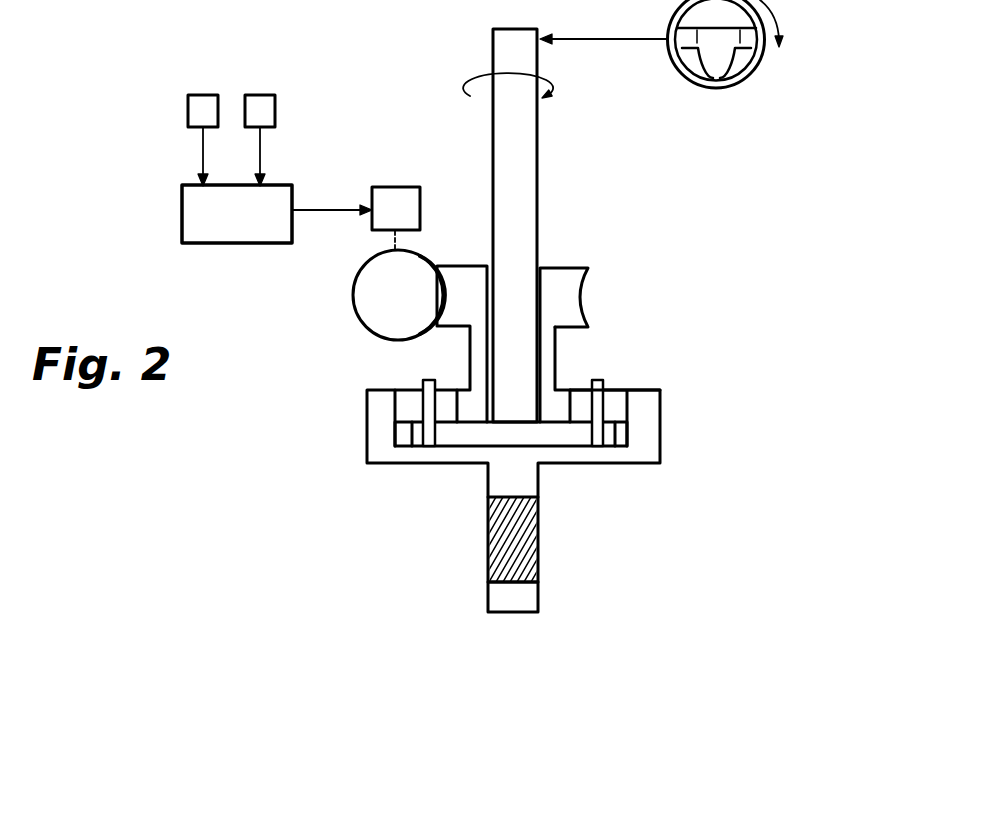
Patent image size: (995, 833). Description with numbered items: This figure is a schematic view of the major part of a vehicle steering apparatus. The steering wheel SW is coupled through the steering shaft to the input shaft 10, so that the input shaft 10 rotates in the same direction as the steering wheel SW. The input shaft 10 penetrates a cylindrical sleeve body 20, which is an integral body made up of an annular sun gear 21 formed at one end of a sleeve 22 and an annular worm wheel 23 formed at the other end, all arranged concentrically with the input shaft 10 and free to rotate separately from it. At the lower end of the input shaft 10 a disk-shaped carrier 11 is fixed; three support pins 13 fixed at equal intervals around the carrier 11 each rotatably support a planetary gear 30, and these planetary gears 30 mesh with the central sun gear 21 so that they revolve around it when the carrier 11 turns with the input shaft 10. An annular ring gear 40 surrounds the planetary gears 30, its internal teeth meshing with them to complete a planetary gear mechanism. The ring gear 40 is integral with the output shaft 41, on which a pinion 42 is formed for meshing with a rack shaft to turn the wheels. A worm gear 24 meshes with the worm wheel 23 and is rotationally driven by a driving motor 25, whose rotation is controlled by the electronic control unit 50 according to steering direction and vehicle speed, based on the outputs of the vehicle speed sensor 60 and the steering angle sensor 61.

The input shaft 10 is at (537, 140).
The carrier 11 is at (465, 437).
The support pins 13 is at (422, 383).
The sleeve body 20 is at (547, 313).
The sun gear 21 is at (558, 400).
The sleeve 22 is at (470, 367).
The worm wheel 23 is at (557, 273).
The worm gear 24 is at (353, 298).
The driving motor 25 is at (412, 187).
The planetary gears 30 is at (618, 407).
The ring gear 40 is at (367, 410).
The output shaft 41 is at (538, 590).
The pinion 42 is at (538, 537).
The electronic control unit (ECU) 50 is at (181, 207).
The vehicle speed sensor 60 is at (210, 95).
The steering angle sensor 61 is at (267, 96).
The steering wheel SW is at (720, 87).